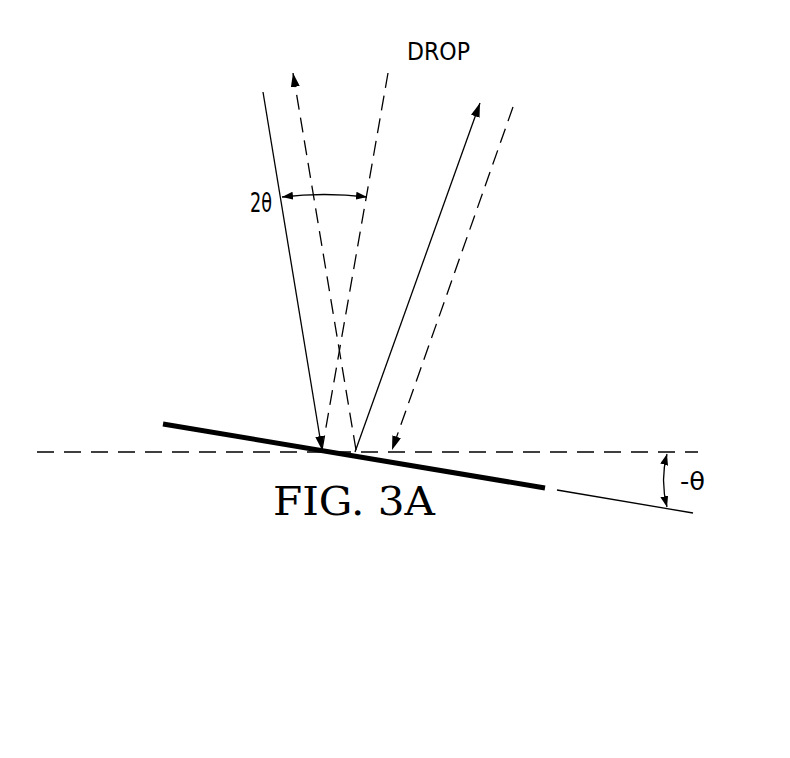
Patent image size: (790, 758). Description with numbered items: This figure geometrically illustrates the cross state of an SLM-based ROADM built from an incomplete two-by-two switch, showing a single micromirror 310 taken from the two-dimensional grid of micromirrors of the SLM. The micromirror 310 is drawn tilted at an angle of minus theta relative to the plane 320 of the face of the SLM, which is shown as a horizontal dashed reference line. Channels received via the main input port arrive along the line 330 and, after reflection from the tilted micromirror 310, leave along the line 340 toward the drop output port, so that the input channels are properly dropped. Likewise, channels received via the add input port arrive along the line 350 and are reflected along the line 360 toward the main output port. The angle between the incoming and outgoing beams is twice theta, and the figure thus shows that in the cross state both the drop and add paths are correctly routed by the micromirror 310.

The micromirror 310 is at (252, 437).
The plane of the face of the SLM 320 is at (110, 453).
The line representing channels from the main input port 330 is at (290, 253).
The line representing channels routed to the drop output port 340 is at (467, 143).
The line representing channels from the add input port 350 is at (468, 230).
The line representing channels routed to the main output port 360 is at (300, 113).